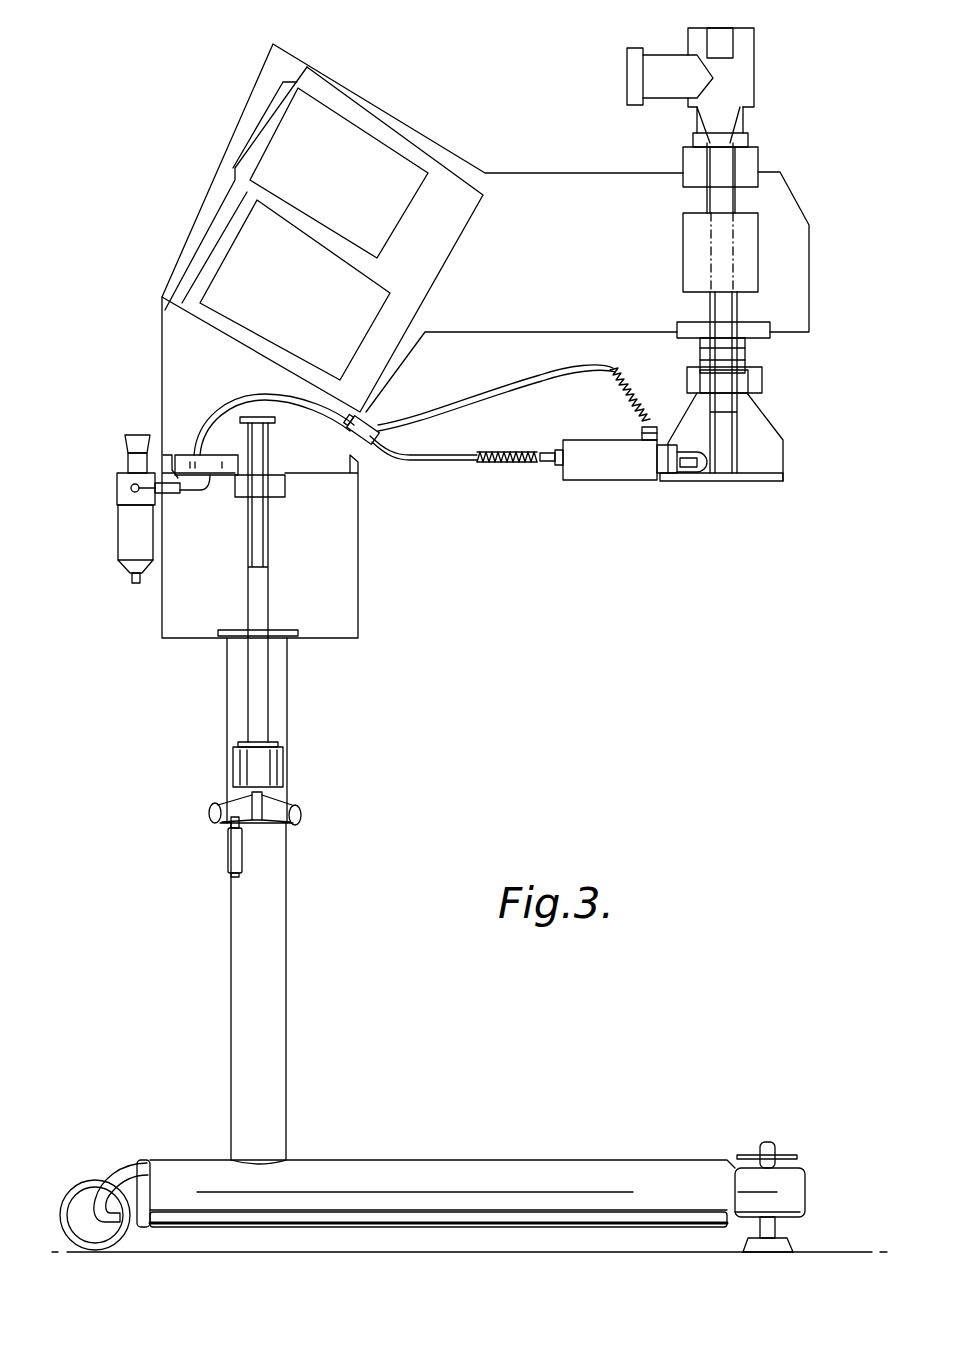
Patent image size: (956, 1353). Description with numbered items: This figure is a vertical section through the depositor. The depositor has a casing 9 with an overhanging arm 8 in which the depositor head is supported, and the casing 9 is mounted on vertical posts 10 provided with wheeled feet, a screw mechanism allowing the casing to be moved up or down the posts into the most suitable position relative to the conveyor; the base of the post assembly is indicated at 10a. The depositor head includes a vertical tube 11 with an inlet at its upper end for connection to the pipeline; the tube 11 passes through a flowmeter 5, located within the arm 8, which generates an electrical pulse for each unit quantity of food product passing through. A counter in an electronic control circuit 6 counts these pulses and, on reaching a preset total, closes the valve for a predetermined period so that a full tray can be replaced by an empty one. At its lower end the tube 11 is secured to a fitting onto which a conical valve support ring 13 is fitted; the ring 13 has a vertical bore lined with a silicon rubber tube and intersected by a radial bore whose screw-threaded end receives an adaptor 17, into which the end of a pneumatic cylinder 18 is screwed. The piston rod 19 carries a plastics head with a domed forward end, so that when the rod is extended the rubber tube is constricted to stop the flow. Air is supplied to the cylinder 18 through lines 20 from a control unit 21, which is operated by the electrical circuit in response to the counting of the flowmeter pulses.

The flowmeter 5 is at (758, 213).
The electronic control circuit 6 is at (257, 127).
The overhanging arm 8 is at (503, 173).
The casing 9 is at (162, 398).
The vertical posts 10 is at (212, 822).
The base with casters 10a is at (213, 1177).
The vertical tube 11 is at (737, 310).
The conical valve support ring 13 is at (758, 428).
The adaptor 17 is at (662, 480).
The pneumatic cylinder 18 is at (600, 480).
The piston rod 19 is at (692, 481).
The lines 20 is at (447, 460).
The control unit 21 is at (228, 477).